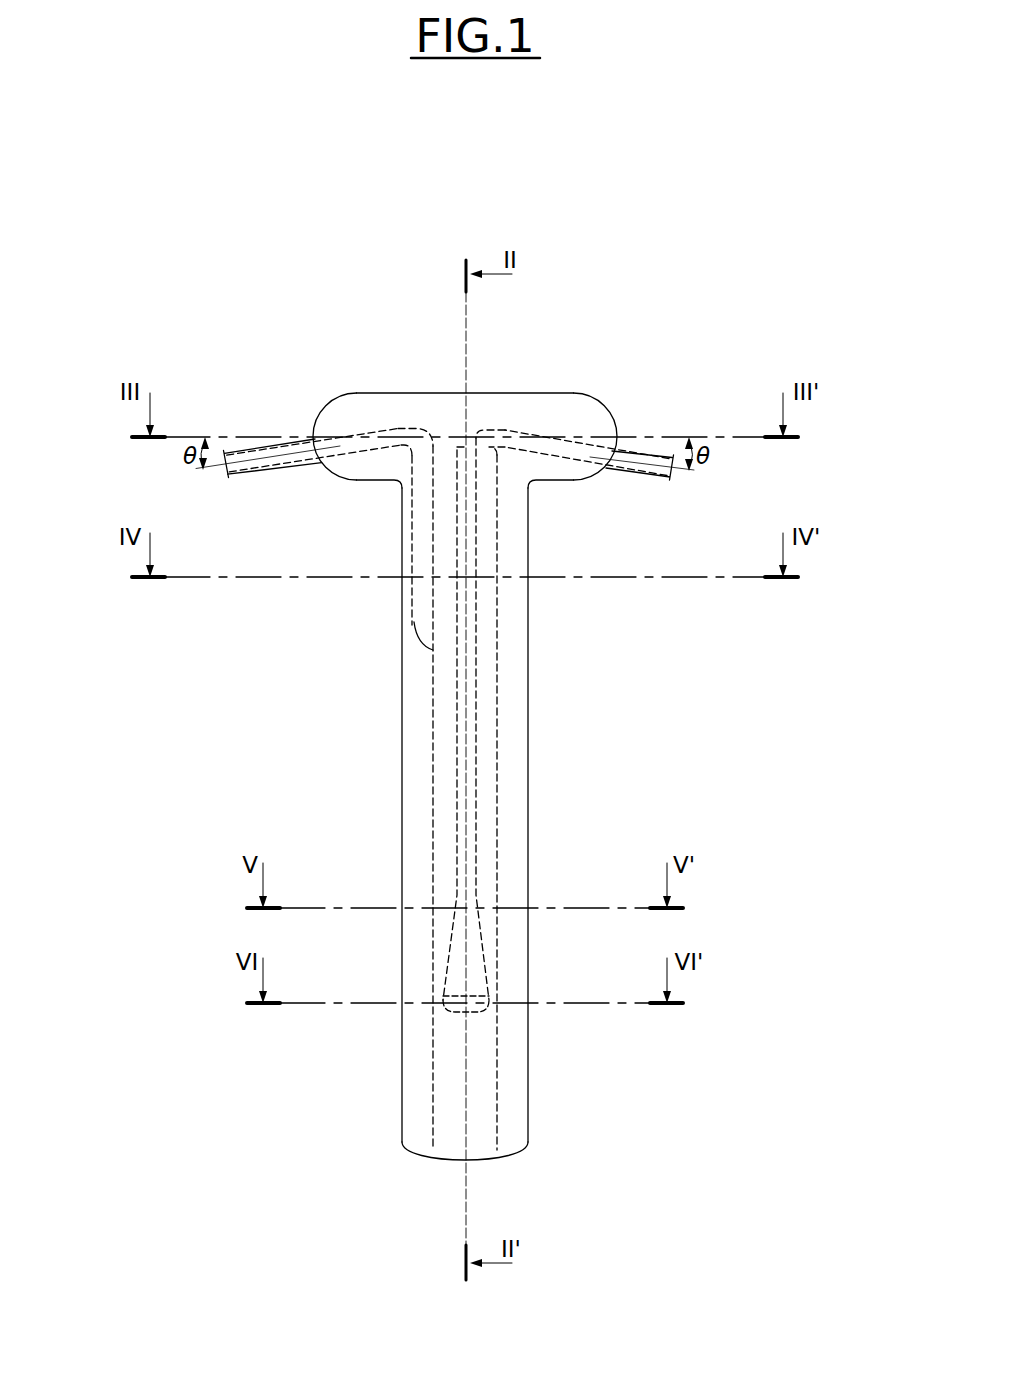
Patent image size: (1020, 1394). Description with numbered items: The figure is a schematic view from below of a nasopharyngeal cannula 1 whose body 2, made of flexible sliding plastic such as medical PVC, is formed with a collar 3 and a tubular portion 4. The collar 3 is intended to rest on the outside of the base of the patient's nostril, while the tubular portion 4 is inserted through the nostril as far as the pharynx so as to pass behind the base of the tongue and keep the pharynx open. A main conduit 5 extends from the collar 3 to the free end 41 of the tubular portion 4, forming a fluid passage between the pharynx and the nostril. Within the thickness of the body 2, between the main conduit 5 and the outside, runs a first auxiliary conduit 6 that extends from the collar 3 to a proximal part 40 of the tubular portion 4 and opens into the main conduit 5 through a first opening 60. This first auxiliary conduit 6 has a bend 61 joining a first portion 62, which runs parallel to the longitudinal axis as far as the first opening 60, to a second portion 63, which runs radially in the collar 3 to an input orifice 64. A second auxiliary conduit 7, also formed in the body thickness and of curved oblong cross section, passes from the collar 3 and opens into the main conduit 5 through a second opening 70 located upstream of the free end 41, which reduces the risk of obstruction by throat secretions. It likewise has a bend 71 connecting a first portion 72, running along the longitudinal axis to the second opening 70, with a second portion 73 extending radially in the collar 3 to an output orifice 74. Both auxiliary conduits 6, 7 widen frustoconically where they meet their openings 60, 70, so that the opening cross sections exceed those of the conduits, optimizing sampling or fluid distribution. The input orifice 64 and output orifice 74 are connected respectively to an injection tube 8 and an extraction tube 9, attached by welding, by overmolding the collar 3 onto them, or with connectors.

The nasopharyngeal cannula 1 is at (606, 283).
The body 2 is at (313, 713).
The collar 3 is at (552, 393).
The tubular portion 4 is at (390, 803).
The main conduit 5 is at (448, 1136).
The first auxiliary conduit 6 is at (366, 428).
The second auxiliary conduit 7 is at (526, 440).
The injection tube 8 is at (257, 471).
The extraction tube 9 is at (659, 477).
The proximal part 40 is at (558, 514).
The free end 41 is at (545, 1152).
The first opening 60 is at (408, 604).
The bend 61 is at (434, 438).
The first portion 62 is at (410, 522).
The second portion 63 is at (393, 428).
The input orifice 64 is at (320, 424).
The second opening 70 is at (452, 1013).
The bend 71 is at (477, 447).
The first portion 72 is at (480, 746).
The second portion 73 is at (500, 430).
The output orifice 74 is at (609, 426).